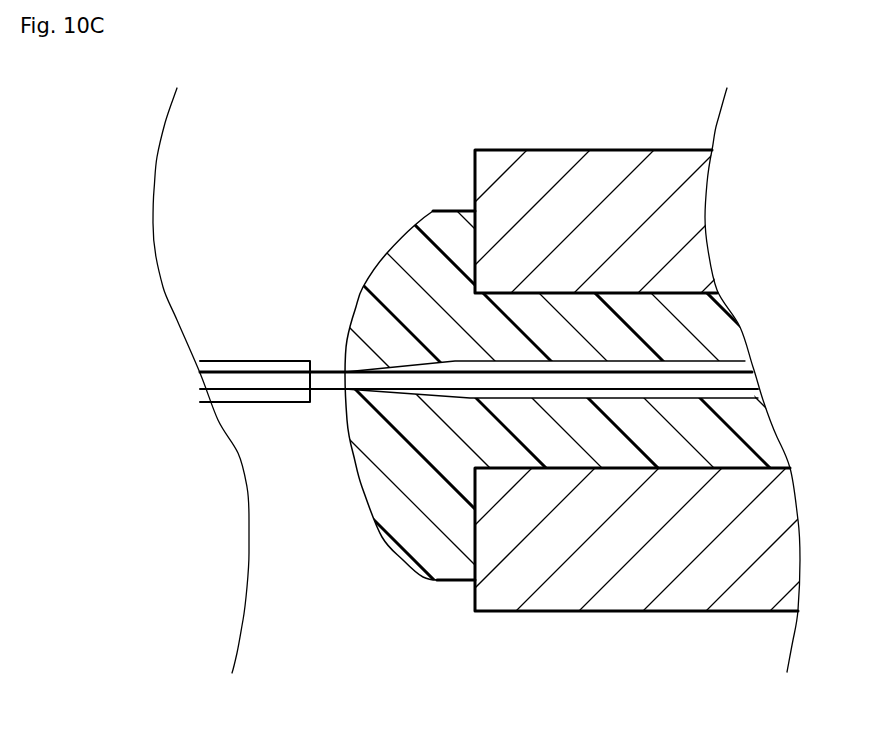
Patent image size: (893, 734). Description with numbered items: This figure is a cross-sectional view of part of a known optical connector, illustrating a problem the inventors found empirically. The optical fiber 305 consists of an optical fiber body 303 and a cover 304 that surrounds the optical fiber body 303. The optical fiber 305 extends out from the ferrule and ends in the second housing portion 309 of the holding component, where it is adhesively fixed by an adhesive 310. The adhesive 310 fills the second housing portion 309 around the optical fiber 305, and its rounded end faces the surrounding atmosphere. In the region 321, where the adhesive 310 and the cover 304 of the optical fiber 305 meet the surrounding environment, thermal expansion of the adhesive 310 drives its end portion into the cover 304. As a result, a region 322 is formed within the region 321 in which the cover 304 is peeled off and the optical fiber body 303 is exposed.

The optical fiber body 303 is at (678, 382).
The cover 304 is at (615, 395).
The optical fiber 305 is at (703, 657).
The second housing portion 309 is at (622, 295).
The adhesive 310 is at (437, 235).
The region 321 is at (343, 355).
The region 322 is at (330, 400).